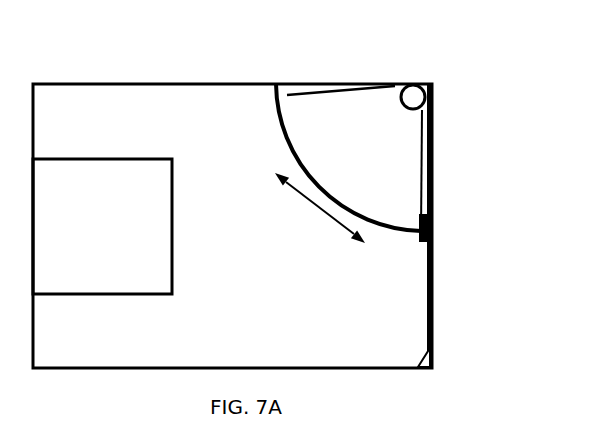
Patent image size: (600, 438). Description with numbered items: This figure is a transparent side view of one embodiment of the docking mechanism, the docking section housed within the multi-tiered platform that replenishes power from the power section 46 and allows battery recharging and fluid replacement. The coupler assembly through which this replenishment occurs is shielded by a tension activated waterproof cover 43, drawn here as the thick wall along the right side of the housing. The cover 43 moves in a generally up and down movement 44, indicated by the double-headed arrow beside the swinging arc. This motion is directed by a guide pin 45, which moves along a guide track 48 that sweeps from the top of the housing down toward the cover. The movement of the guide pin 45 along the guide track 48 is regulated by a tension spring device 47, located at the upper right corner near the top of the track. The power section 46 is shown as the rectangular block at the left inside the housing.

The tension activated waterproof cover 43 is at (446, 322).
The up and down movement 44 is at (320, 216).
The guide pin 45 is at (409, 252).
The power section 46 is at (128, 249).
The tension spring device 47 is at (411, 70).
The guide track 48 is at (258, 113).